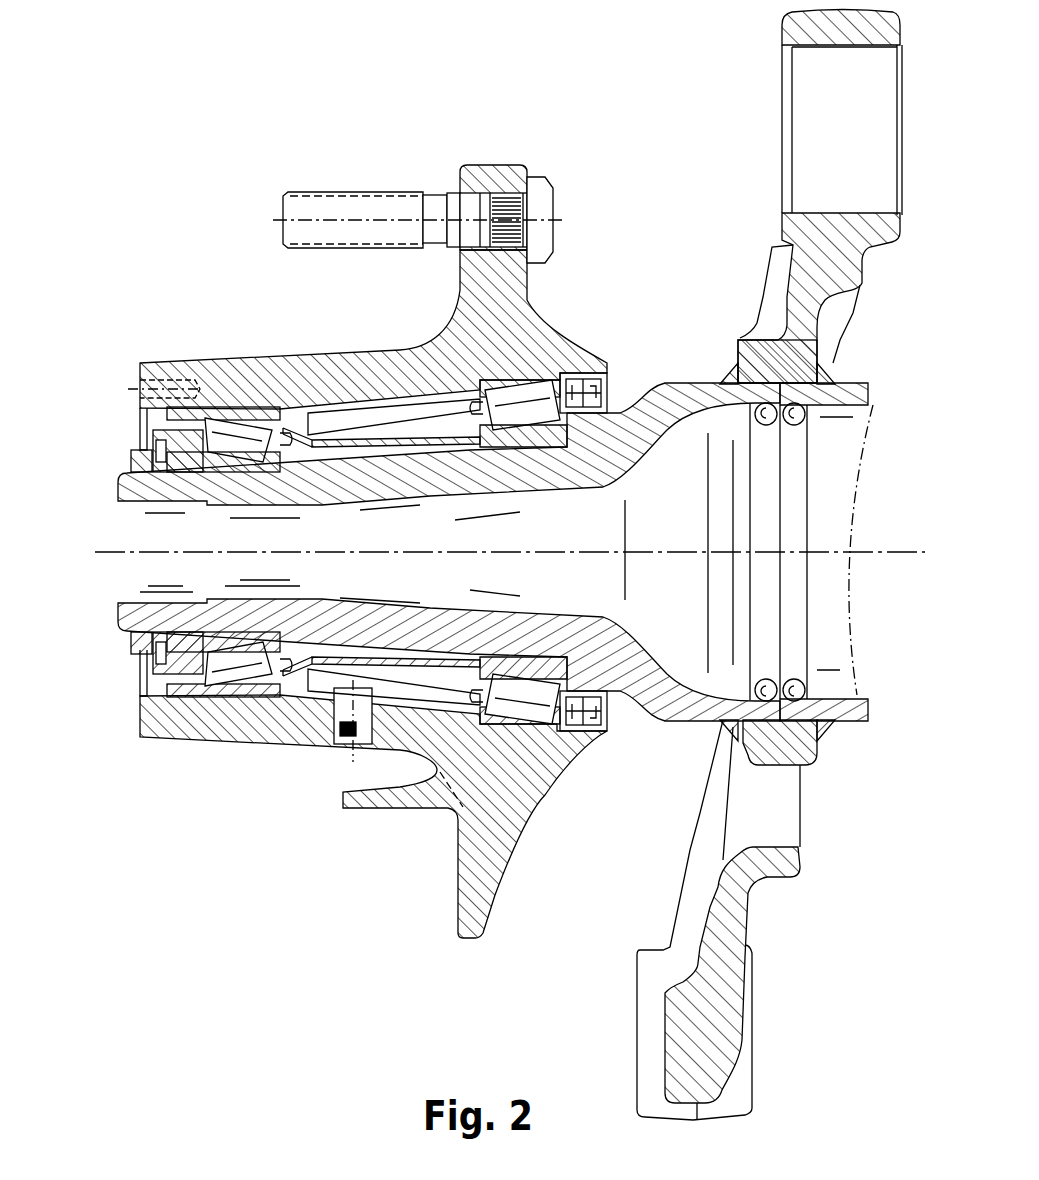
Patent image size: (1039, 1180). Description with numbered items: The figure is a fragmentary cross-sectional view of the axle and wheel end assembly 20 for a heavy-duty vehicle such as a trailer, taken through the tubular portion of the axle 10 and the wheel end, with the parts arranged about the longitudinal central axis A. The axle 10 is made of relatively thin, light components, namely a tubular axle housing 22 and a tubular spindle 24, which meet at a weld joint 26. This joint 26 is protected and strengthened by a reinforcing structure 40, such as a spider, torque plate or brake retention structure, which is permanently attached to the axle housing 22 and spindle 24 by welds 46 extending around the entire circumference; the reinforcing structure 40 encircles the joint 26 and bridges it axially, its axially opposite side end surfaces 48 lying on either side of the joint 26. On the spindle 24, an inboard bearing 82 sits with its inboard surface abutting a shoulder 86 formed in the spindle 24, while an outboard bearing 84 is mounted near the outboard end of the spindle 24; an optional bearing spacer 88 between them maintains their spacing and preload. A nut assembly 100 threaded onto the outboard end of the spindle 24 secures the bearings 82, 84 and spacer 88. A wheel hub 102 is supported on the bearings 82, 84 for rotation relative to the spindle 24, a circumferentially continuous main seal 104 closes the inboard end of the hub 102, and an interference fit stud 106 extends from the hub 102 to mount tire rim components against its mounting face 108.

The axle 10 is at (857, 728).
The axle and wheel end assembly 20 is at (100, 192).
The tubular axle housing 22 is at (847, 693).
The tubular spindle 24 is at (115, 612).
The joint 26 is at (780, 603).
The reinforcing structure 40 is at (866, 270).
The welds 46 is at (728, 380).
The side end surfaces 48 is at (726, 377).
The inboard bearing 82 is at (520, 720).
The outboard bearing 84 is at (240, 688).
The shoulder 86 is at (565, 630).
The bearing spacer 88 is at (340, 437).
The nut assembly 100 is at (115, 657).
The wheel hub 102 is at (240, 362).
The main seal 104 is at (608, 385).
The interference fit studs 106 is at (337, 190).
The mounting face 108 is at (460, 261).
The longitudinal central axis A is at (903, 550).